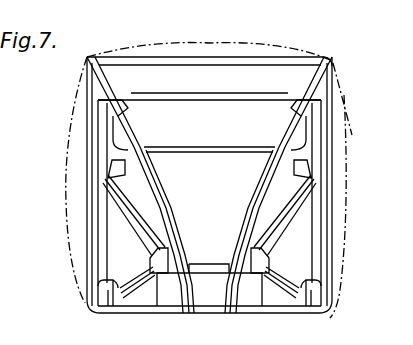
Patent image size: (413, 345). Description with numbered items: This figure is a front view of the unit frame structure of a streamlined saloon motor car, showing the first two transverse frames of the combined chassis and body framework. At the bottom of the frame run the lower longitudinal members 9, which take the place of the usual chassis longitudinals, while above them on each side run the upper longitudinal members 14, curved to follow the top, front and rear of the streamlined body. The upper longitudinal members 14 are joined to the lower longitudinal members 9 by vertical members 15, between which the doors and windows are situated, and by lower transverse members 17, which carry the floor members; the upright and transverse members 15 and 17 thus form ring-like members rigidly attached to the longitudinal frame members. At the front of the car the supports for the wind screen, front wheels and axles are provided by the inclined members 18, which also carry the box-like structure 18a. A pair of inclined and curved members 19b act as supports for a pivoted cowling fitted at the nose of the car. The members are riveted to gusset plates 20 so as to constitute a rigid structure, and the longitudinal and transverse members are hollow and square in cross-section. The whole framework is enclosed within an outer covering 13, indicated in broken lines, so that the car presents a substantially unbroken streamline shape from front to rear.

The lower longitudinal member 9 is at (112, 306).
The outer covering 13 is at (210, 43).
The upper longitudinal member 14 is at (108, 82).
The vertical member 15 is at (108, 222).
The lower transverse member 17 is at (139, 312).
The inclined member 18 is at (273, 243).
The box-like structure 18a is at (158, 288).
The inclined and curved member 19b is at (209, 230).
The gusset plate 20 is at (107, 108).